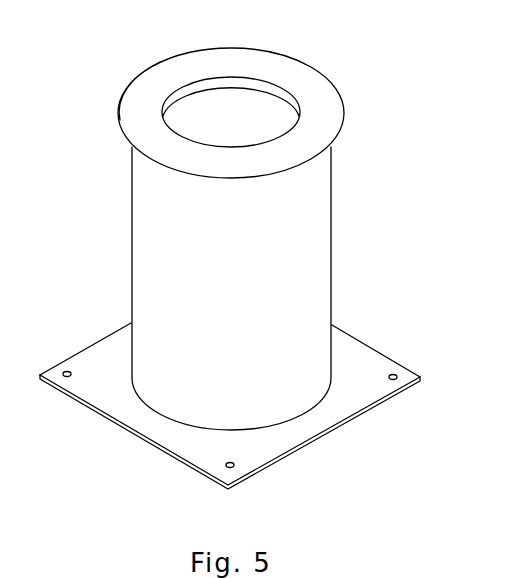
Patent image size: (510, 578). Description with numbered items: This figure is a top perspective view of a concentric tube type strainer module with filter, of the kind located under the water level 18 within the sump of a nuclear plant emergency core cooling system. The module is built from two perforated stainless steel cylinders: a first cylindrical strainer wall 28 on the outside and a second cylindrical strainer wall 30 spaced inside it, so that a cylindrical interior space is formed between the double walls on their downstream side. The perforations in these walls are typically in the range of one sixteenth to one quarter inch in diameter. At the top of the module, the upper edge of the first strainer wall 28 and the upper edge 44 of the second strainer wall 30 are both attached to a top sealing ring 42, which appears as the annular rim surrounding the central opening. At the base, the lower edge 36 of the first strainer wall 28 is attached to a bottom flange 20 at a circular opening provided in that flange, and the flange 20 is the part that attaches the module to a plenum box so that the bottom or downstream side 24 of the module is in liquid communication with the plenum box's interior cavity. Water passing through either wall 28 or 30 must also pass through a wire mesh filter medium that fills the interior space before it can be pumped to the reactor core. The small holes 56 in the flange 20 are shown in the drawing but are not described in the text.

The water level 18 is at (345, 117).
The top sealing ring 42 is at (162, 75).
The upper edge of the second strainer 44 is at (242, 92).
The second cylindrical strainer wall 30 is at (265, 110).
The first cylindrical strainer wall 28 is at (323, 227).
The bottom flange 20 is at (360, 353).
The downstream side 24 is at (323, 438).
The lower edge of the first strainer 36 is at (200, 412).
The mounting holes 56 is at (65, 370).